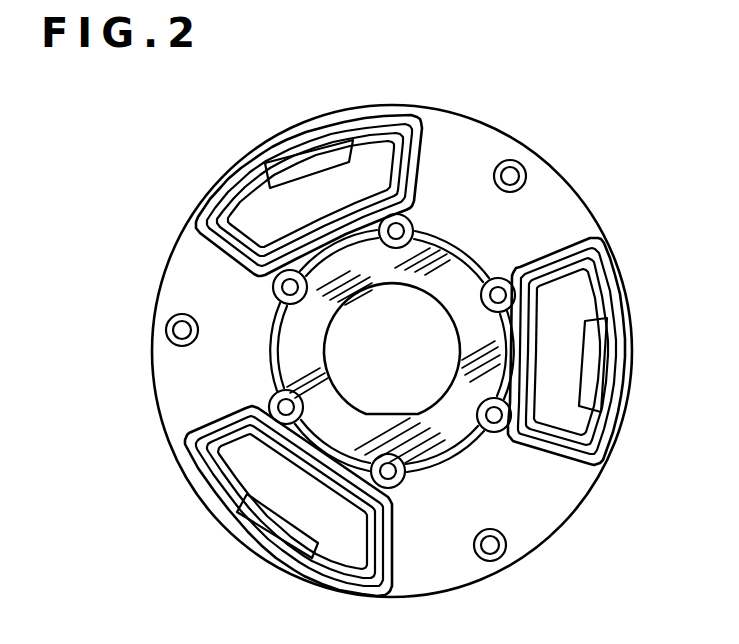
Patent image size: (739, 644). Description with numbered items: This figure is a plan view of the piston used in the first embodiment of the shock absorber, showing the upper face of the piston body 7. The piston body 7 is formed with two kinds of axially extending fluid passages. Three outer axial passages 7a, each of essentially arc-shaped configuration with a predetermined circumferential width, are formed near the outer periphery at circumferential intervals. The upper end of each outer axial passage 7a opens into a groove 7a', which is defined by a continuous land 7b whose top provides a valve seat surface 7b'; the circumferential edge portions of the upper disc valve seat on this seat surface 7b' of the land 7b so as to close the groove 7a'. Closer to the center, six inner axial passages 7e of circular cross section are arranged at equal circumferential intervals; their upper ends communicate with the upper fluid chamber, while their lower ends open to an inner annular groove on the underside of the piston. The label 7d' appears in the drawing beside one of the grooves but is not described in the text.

The rotor disk 7 is at (578, 183).
The magnet block 7a is at (425, 342).
The slot floor recess 7a' is at (400, 418).
The slot floor recess 7d' is at (253, 194).
The raised rim of slot 7b is at (439, 323).
The inner edge of rim 7b' is at (412, 380).
The holes in hub ring 7e is at (291, 279).